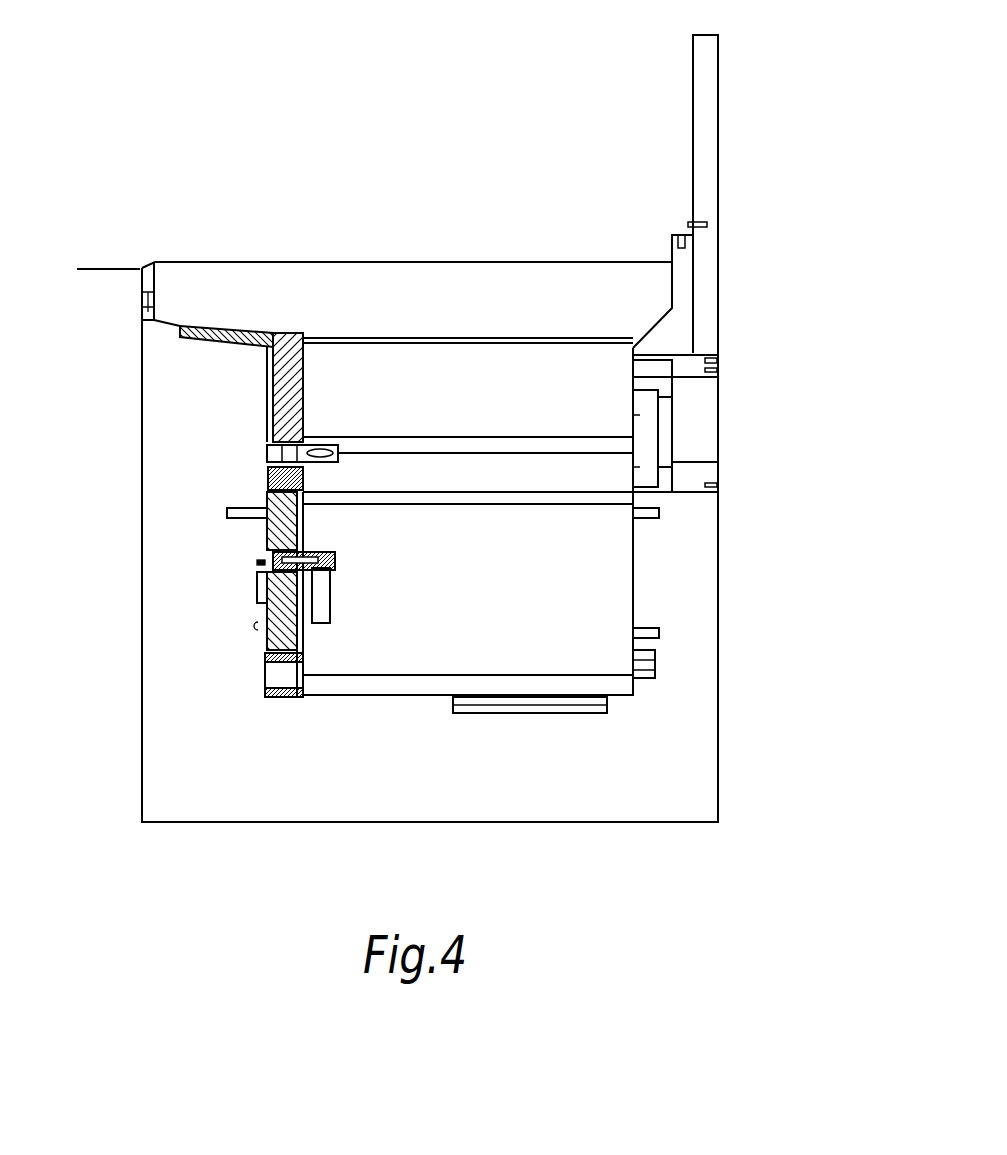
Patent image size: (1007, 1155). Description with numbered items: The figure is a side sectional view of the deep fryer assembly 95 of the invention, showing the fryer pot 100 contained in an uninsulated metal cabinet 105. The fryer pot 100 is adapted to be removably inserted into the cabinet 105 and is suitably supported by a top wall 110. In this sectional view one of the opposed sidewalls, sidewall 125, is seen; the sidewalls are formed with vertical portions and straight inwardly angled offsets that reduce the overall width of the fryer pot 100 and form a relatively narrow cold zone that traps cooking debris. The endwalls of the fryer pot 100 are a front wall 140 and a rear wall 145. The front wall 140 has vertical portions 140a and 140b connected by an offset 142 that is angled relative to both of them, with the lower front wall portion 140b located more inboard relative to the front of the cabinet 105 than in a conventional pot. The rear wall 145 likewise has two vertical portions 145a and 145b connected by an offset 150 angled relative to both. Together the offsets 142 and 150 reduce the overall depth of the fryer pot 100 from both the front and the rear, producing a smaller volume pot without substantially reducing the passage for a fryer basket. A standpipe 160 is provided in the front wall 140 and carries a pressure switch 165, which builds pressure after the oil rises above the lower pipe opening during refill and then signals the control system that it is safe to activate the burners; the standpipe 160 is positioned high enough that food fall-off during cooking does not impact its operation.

The deep fryer assembly 95 is at (499, 154).
The fryer pot 100 is at (405, 337).
The cabinet 105 is at (142, 630).
The top wall 110 is at (112, 268).
The sidewall 125 is at (633, 427).
The front wall 140 is at (263, 526).
The vertical portion 140a is at (143, 277).
The vertical portion 140b is at (268, 408).
The offset 142 is at (167, 324).
The rear wall 145 is at (633, 587).
The vertical portion 145a is at (690, 283).
The vertical portion 145b is at (633, 610).
The offset 150 is at (672, 320).
The standpipe 160 is at (323, 592).
The pressure switch 165 is at (258, 562).